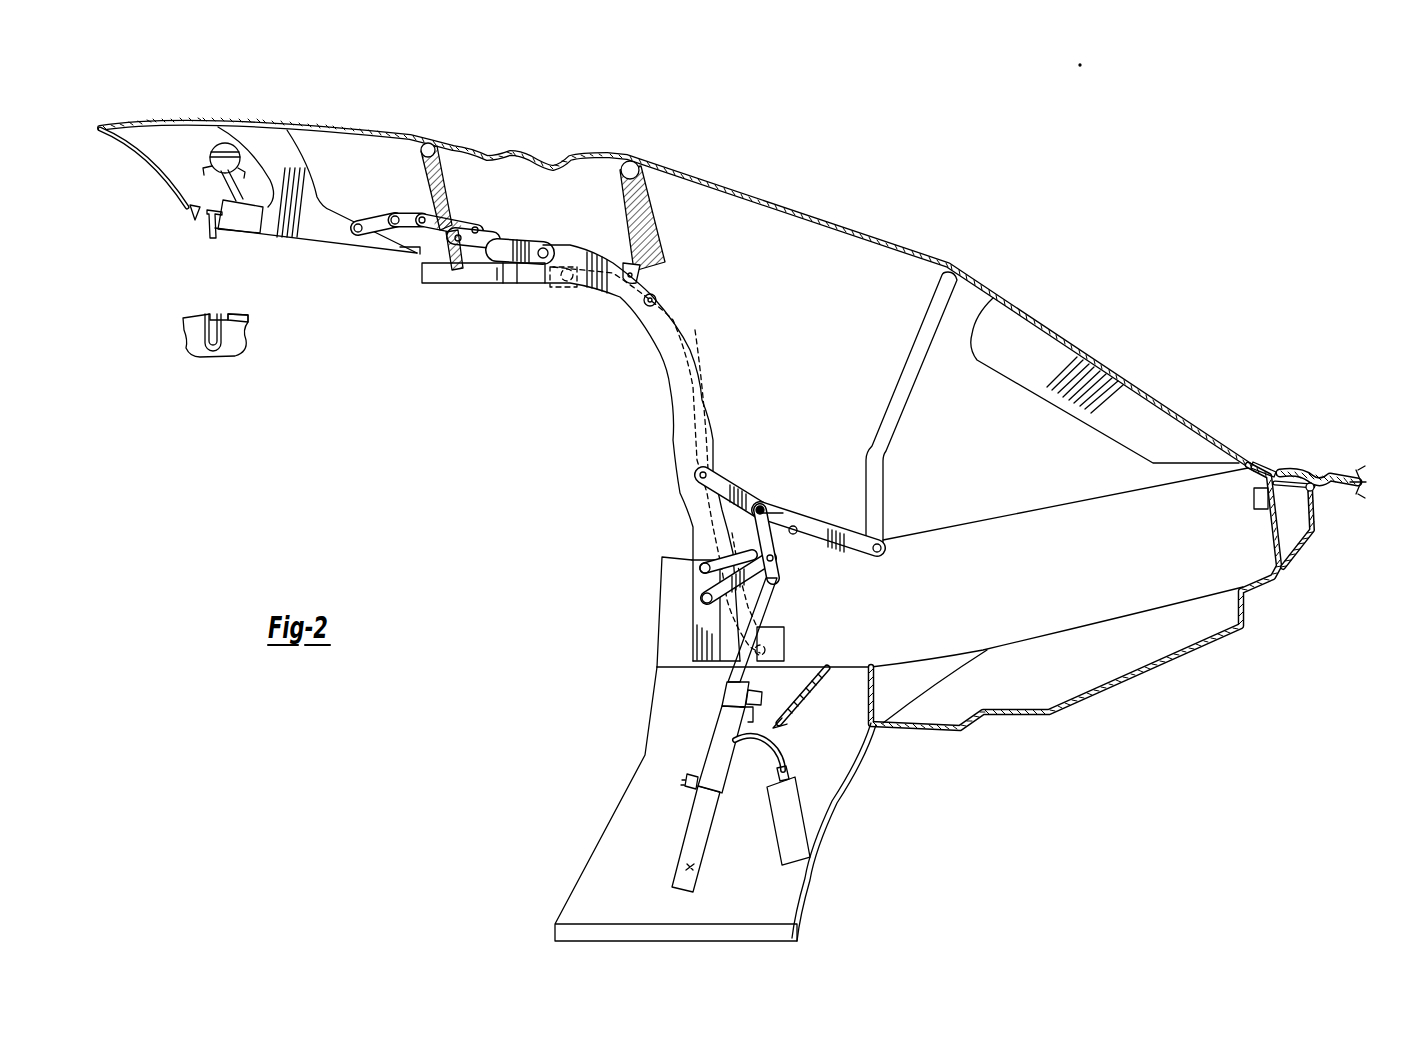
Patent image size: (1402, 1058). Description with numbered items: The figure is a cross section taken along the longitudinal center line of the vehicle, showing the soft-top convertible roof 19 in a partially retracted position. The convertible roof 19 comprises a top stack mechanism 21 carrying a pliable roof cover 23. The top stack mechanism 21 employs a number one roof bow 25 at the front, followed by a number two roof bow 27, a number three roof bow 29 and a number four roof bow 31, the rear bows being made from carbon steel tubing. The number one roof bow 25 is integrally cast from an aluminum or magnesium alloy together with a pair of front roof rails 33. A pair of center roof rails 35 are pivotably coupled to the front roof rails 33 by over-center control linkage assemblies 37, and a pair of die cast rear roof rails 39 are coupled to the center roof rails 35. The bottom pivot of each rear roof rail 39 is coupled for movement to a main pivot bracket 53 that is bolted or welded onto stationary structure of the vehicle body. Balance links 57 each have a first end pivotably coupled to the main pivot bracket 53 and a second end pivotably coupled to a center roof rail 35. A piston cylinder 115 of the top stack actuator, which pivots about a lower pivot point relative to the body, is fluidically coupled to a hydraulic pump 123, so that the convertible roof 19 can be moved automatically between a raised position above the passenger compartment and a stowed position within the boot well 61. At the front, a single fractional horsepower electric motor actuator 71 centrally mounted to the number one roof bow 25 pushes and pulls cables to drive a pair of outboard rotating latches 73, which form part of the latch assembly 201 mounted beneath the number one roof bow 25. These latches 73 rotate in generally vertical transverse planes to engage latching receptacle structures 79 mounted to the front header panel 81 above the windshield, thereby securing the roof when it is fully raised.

The soft-top convertible roof 19 is at (677, 293).
The top stack mechanism 21 is at (432, 580).
The roof cover 23 is at (828, 220).
The number one roof bow 25 is at (180, 150).
The number two roof bow 27 is at (430, 142).
The number three roof bow 29 is at (637, 210).
The number four roof bow 31 is at (891, 423).
The front roof rails 33 is at (320, 223).
The center roof rails 35 is at (478, 282).
The over-center control linkage assemblies 37 is at (373, 190).
The rear roof rails 39 is at (677, 453).
The main pivot bracket 53 is at (697, 626).
The balance links 57 is at (693, 407).
The boot well 61 is at (1102, 580).
The electric motor actuator 71 is at (224, 150).
The rotating latches 73 is at (200, 217).
The latching receptacle structures 79 is at (183, 317).
The front header panel 81 is at (228, 337).
The piston cylinder 115 is at (715, 755).
The hydraulic pump 123 is at (792, 813).
The latch assembly 201 is at (237, 246).